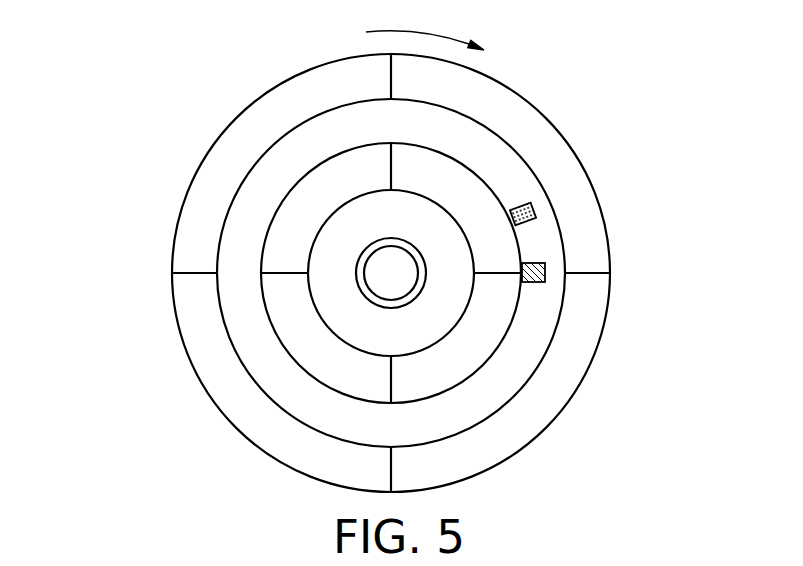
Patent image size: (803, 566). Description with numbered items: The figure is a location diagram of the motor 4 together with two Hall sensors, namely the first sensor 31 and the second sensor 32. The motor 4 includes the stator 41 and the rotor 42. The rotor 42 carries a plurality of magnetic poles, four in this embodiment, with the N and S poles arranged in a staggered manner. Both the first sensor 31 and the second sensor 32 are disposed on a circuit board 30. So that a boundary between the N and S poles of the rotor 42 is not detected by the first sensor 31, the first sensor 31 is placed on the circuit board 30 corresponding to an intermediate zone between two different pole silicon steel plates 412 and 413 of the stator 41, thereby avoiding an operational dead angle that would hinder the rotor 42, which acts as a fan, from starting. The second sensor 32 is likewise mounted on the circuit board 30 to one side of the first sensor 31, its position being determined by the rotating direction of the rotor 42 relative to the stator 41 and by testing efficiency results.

The motor 4 is at (67, 67).
The stator 41 is at (270, 226).
The rotor 42 is at (185, 348).
The pole silicon steel plate 412 is at (458, 160).
The pole silicon steel plate 413 is at (510, 326).
The circuit board 30 is at (517, 175).
The first sensor 31 is at (545, 265).
The second sensor 32 is at (533, 203).